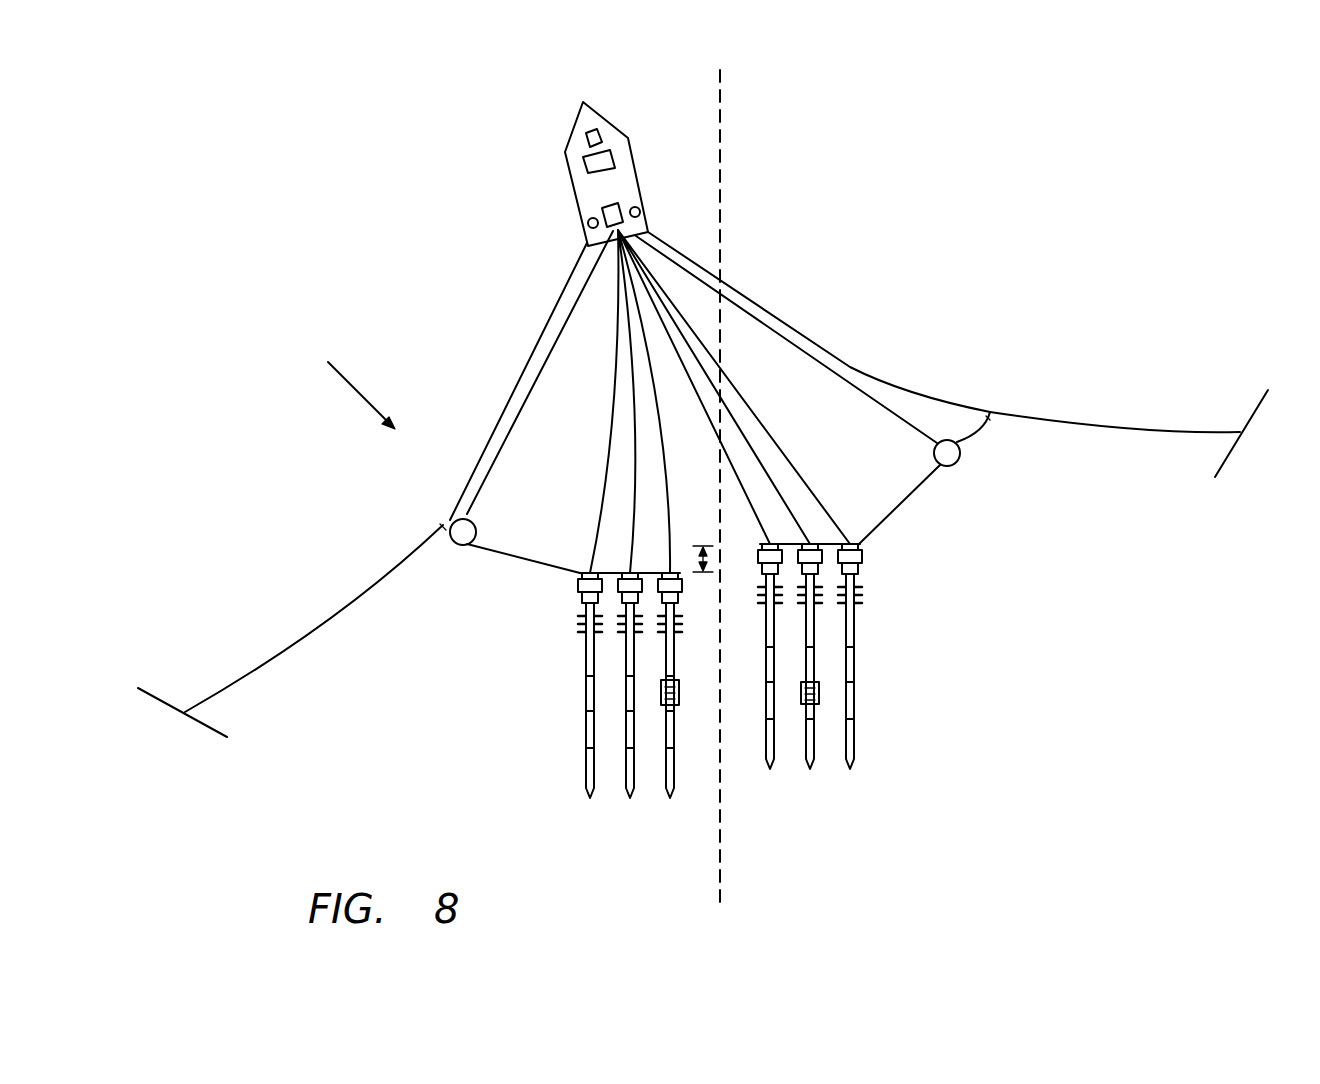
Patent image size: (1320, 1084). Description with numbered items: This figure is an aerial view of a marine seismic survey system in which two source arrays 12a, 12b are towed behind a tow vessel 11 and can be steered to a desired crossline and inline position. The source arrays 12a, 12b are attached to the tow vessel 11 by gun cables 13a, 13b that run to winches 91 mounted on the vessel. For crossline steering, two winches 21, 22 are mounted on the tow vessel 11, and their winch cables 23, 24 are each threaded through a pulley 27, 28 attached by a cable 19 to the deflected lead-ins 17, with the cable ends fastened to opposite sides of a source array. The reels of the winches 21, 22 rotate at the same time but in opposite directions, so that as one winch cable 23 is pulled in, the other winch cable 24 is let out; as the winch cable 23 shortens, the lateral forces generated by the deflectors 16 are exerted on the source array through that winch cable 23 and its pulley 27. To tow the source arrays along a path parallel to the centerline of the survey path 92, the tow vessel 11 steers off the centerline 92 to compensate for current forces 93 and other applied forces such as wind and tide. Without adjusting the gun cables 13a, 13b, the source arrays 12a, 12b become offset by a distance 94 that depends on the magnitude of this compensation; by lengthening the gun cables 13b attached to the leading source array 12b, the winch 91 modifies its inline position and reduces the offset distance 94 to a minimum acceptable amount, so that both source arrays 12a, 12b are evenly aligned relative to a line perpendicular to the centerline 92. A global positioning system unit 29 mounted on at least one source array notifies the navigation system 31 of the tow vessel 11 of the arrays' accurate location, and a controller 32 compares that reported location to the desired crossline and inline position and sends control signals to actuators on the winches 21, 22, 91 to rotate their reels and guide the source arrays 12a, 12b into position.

The tow vessel 11 is at (572, 132).
The navigation system 31 is at (600, 137).
The controller 32 is at (615, 153).
The winch 91 is at (602, 210).
The winch 21 is at (588, 224).
The winch 22 is at (641, 210).
The winch cable 23 is at (572, 312).
The winch cable 24 is at (880, 378).
The pulley 27 is at (477, 528).
The pulley 28 is at (934, 447).
The deflected lead-in 17 is at (318, 628).
The deflector 16 is at (152, 692).
The cable 19 is at (443, 527).
The gun cable 13a is at (660, 440).
The gun cable 13b is at (810, 502).
The source array 12a is at (585, 816).
The source array 12b is at (858, 816).
The global positioning system unit 29 is at (661, 692).
The offset distance 94 is at (697, 560).
The current forces 93 is at (261, 335).
The centerline of the survey path 92 is at (722, 870).